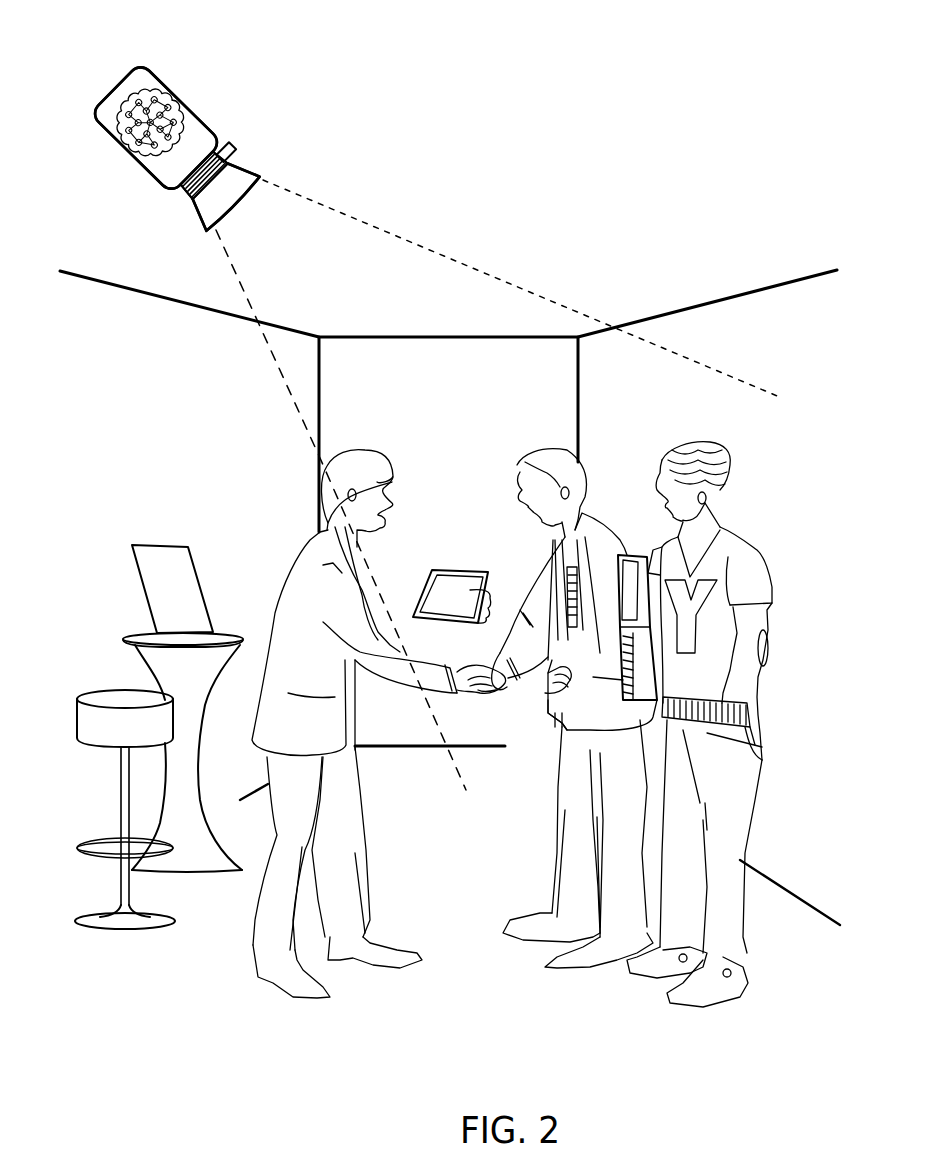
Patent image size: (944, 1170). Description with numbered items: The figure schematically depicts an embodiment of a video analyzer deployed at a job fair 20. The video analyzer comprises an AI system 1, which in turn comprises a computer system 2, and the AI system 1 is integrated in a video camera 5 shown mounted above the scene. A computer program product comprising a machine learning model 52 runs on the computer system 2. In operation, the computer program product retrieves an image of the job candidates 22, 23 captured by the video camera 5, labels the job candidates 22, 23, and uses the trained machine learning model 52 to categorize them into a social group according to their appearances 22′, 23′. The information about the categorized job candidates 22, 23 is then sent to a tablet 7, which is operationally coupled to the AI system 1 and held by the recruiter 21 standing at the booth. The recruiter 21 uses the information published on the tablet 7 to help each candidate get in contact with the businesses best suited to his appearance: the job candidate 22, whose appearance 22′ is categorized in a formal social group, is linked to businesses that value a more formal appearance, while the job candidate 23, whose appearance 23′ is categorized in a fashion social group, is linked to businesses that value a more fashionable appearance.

The AI system 1 is at (118, 80).
The computer system 2 is at (142, 72).
The video camera 5 is at (237, 158).
The machine learning model 52 is at (127, 153).
The job fair 20 is at (450, 597).
The recruiter 21 is at (305, 540).
The tablet 7 is at (450, 568).
The appearance 22′ is at (580, 710).
The job candidate 22 is at (590, 517).
The job candidate 23 is at (743, 530).
The appearance 23′ is at (732, 733).